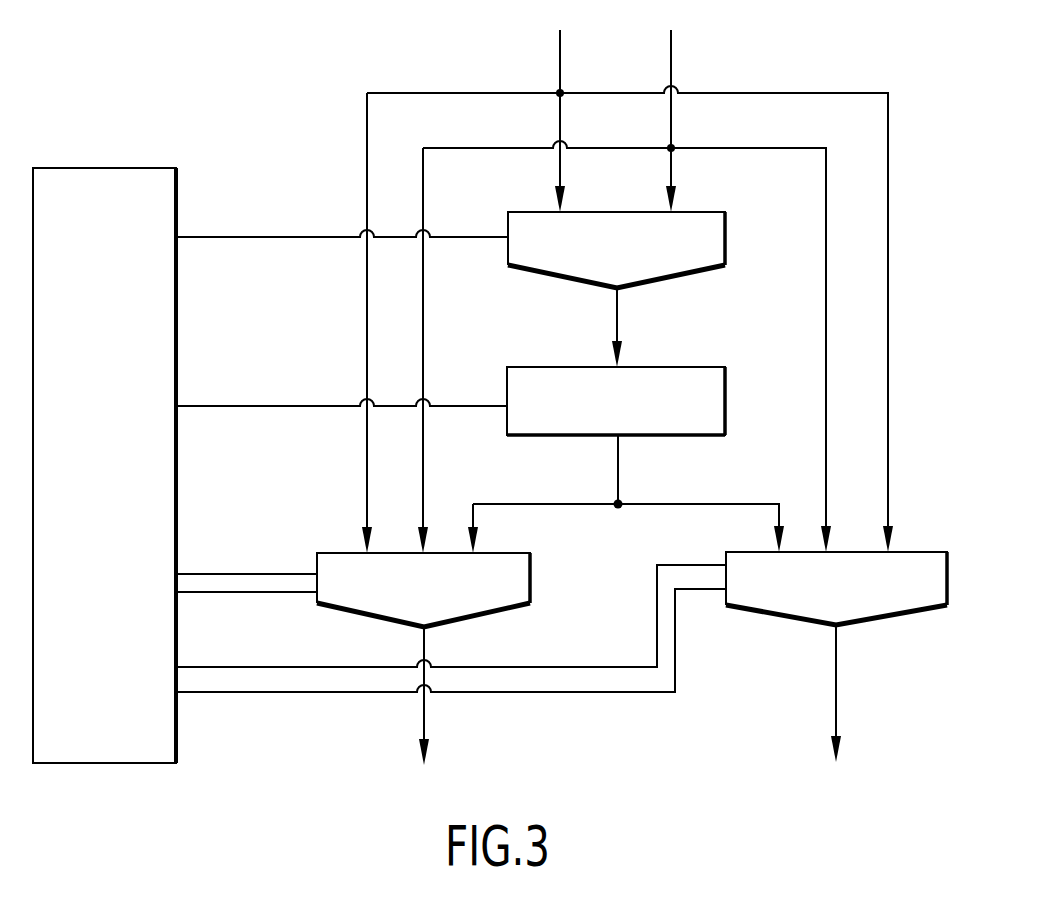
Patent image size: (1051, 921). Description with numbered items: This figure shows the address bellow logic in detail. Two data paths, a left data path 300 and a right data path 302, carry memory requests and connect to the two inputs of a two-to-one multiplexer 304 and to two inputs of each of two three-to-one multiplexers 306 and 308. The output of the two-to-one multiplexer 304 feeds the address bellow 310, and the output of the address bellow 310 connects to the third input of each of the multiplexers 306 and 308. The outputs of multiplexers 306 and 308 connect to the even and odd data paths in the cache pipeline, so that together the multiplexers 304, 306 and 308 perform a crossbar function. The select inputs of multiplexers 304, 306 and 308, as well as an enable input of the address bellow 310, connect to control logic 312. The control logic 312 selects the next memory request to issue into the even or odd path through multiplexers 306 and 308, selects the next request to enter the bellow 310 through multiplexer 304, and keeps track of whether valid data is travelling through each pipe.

The left data path 300 is at (560, 61).
The right data path 302 is at (671, 59).
The 2-to-1 multiplexer 304 is at (725, 240).
The 3-to-1 multiplexer 306 is at (530, 578).
The 3-to-1 multiplexer 308 is at (947, 580).
The address bellow 310 is at (725, 388).
The control logic 312 is at (88, 167).